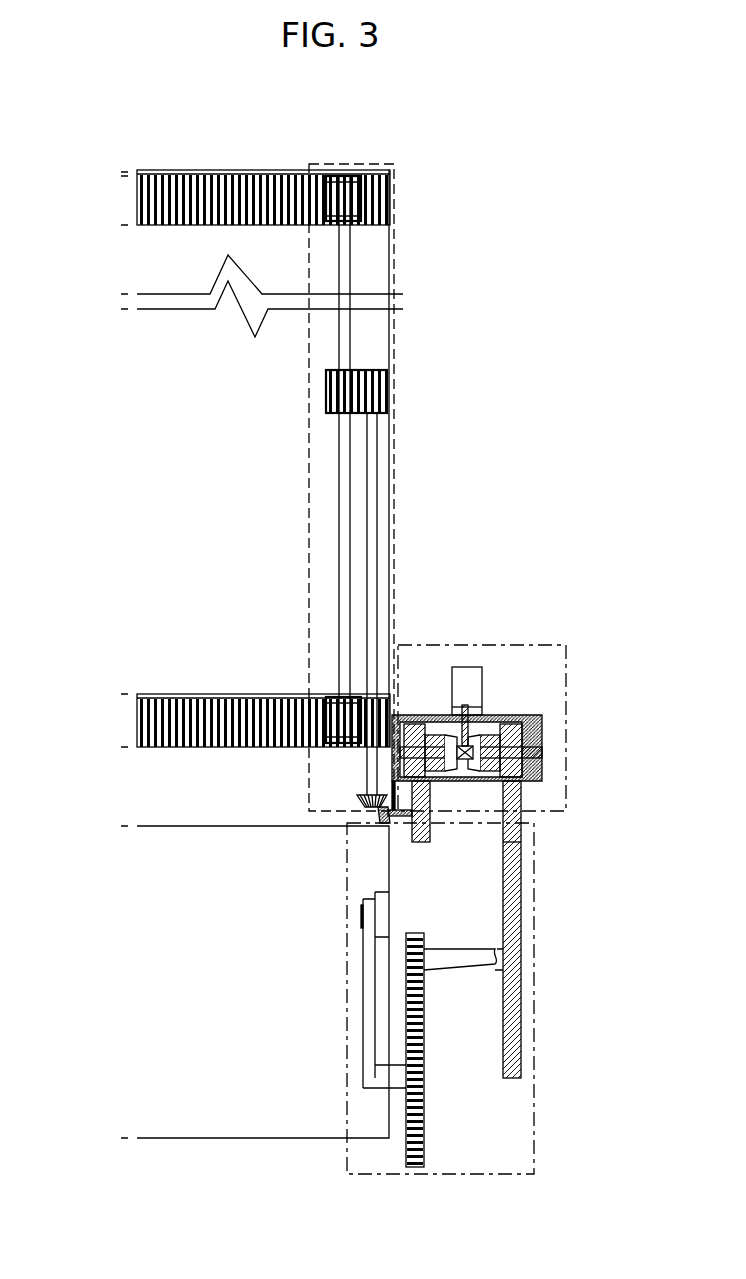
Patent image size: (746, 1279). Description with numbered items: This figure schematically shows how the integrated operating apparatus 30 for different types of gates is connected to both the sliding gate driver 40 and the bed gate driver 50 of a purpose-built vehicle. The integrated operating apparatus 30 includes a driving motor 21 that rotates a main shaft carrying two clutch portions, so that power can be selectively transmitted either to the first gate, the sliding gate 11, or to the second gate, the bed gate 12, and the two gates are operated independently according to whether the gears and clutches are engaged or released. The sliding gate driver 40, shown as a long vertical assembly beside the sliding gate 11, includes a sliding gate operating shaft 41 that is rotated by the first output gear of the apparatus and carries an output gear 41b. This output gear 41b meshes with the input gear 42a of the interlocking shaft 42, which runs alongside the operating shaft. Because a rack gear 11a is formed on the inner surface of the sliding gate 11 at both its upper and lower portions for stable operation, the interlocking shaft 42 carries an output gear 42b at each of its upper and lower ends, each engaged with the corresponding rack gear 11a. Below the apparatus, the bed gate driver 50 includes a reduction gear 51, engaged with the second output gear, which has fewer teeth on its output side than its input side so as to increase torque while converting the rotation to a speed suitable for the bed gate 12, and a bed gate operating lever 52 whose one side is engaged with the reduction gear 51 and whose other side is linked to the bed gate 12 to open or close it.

The sliding gate 11 is at (196, 610).
The rack gear 11a is at (247, 193).
The bed gate 12 is at (206, 973).
The driving motor 21 is at (465, 672).
The integrated operating apparatus 30 is at (574, 665).
The sliding gate driver 40 is at (300, 452).
The sliding gate operating shaft 41 is at (376, 490).
The output gear 41b is at (383, 388).
The interlocking shaft 42 is at (343, 542).
The input gear 42a is at (333, 392).
The output gear 42b is at (343, 190).
The bed gate driver 50 is at (547, 997).
The reduction gear 51 is at (515, 900).
The bed gate operating lever 52 is at (375, 1082).